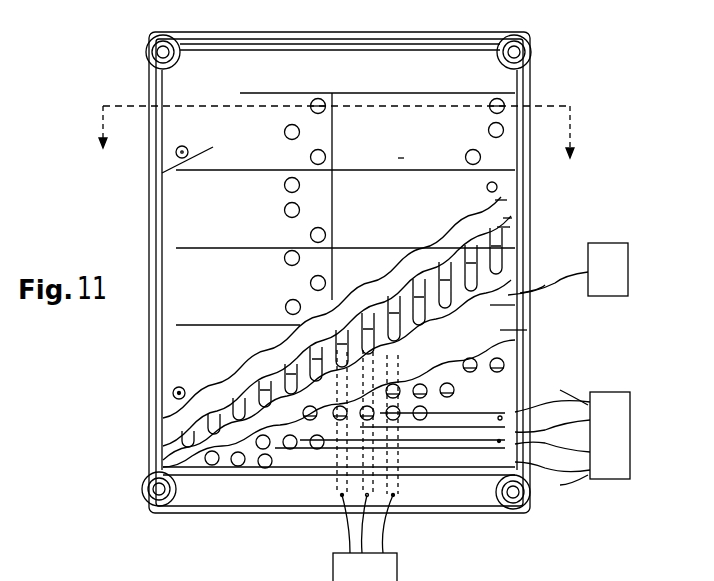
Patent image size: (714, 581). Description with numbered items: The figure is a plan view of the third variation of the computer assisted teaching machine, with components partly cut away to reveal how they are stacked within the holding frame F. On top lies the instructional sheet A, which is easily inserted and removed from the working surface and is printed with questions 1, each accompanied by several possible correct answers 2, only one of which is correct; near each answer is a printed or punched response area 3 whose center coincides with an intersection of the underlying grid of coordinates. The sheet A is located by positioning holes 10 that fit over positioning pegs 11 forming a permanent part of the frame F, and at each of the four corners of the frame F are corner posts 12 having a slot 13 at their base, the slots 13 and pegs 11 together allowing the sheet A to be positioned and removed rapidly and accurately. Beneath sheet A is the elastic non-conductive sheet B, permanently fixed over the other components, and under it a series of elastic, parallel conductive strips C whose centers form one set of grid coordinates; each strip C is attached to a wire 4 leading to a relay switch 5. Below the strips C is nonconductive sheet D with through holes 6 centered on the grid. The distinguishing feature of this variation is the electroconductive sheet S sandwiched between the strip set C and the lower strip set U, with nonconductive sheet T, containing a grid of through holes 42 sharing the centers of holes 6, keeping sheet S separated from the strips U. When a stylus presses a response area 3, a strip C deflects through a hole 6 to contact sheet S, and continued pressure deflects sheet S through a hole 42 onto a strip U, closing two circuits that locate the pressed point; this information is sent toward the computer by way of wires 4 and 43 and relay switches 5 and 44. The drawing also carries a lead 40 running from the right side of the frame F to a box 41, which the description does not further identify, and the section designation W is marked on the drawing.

The question 1 is at (152, 176).
The possible correct answer 2 is at (524, 125).
The response area 3 is at (516, 175).
The wire 4 is at (347, 538).
The relay switch 5 is at (365, 567).
The through hole 6 is at (470, 283).
The positioning hole 10 is at (173, 391).
The positioning peg 11 is at (172, 395).
The corner post 12 is at (152, 52).
The slot 13 is at (147, 68).
The conductor wire 40 is at (569, 272).
The signal unit 41 is at (568, 269).
The through hole 42 is at (503, 365).
The wire 43 is at (578, 398).
The relay switch 44 is at (572, 435).
The instructional sheet A is at (496, 77).
The elastic non-conductive sheet B is at (527, 200).
The conductive strips C is at (505, 238).
The nonconductive sheet D is at (512, 218).
The electroconductive sheet S is at (515, 305).
The nonconductive sheet T is at (527, 330).
The conductive strips U is at (447, 443).
The holding frame F is at (148, 33).
The section line W is at (590, 161).